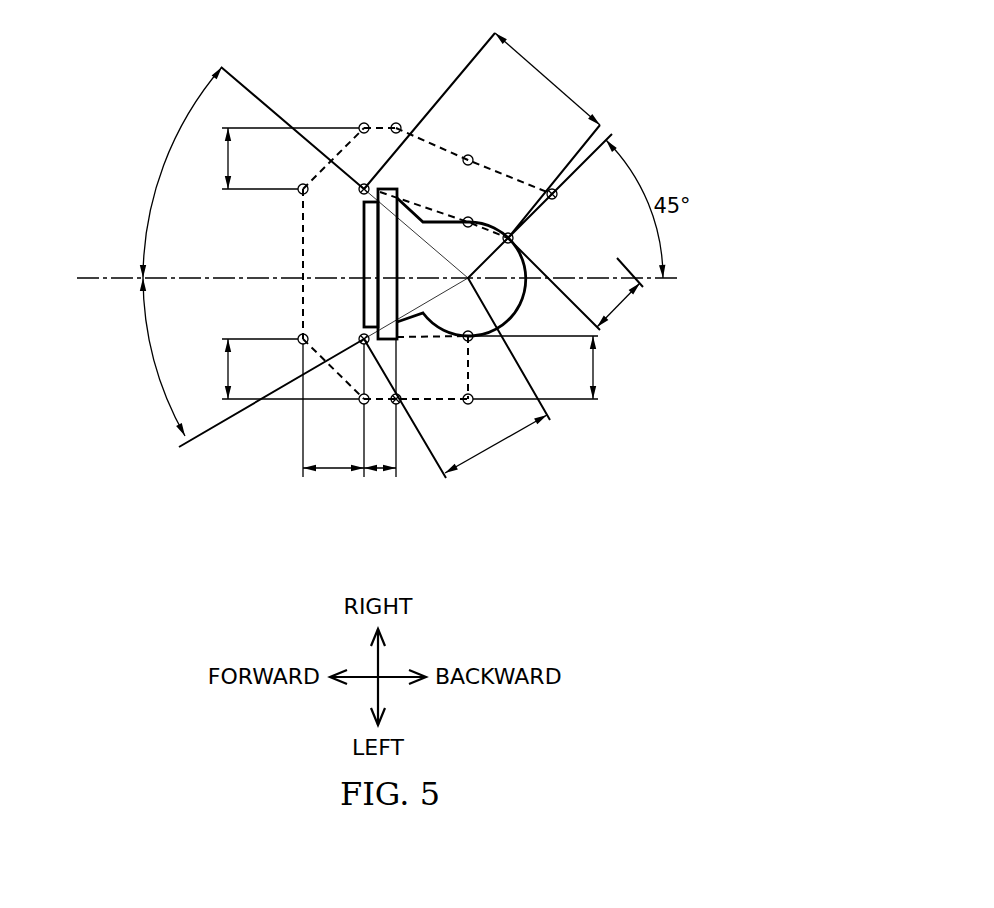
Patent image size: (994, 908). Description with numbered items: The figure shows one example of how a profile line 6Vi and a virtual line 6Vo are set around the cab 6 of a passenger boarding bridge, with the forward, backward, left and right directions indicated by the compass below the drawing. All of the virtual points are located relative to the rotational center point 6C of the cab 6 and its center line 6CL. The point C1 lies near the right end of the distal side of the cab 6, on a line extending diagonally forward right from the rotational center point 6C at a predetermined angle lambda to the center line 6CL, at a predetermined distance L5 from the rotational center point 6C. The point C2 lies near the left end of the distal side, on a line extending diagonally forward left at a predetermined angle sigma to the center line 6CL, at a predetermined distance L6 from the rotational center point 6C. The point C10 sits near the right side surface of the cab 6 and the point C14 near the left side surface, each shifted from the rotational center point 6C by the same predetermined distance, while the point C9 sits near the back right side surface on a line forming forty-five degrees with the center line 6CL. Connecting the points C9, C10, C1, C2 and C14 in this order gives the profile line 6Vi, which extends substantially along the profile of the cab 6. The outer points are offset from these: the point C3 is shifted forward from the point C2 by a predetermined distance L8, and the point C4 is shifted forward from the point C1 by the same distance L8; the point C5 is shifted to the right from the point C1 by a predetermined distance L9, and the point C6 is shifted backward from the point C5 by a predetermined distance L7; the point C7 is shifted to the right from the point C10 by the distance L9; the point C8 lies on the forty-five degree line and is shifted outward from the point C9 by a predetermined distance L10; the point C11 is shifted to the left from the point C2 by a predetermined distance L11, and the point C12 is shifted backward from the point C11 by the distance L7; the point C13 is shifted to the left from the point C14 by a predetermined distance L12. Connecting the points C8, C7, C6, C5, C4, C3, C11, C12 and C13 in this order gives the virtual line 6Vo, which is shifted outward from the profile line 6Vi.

The cab 6 is at (524, 293).
The rotational center point 6C is at (364, 267).
The center line 6CL is at (102, 278).
The profile line 6Vi is at (412, 202).
The virtual line 6Vo is at (517, 178).
The point C1 is at (361, 194).
The point C2 is at (360, 335).
The point C3 is at (298, 337).
The point C4 is at (298, 192).
The point C5 is at (362, 123).
The point C6 is at (395, 123).
The point C7 is at (469, 155).
The point C8 is at (557, 196).
The point C9 is at (513, 240).
The point C10 is at (469, 217).
The point C11 is at (362, 404).
The point C12 is at (397, 404).
The point C13 is at (467, 404).
The point C14 is at (466, 341).
The predetermined distance L5 is at (547, 79).
The predetermined distance L6 is at (496, 445).
The predetermined distance L7 is at (380, 422).
The predetermined distance L8 is at (333, 424).
The predetermined distance L9 is at (278, 158).
The predetermined distance L10 is at (627, 307).
The predetermined distance L11 is at (271, 369).
The predetermined distance L12 is at (554, 367).